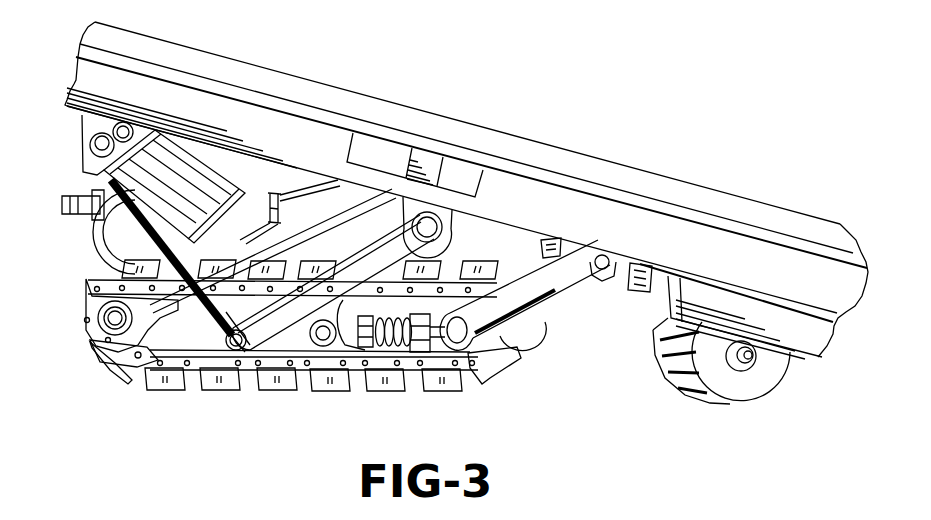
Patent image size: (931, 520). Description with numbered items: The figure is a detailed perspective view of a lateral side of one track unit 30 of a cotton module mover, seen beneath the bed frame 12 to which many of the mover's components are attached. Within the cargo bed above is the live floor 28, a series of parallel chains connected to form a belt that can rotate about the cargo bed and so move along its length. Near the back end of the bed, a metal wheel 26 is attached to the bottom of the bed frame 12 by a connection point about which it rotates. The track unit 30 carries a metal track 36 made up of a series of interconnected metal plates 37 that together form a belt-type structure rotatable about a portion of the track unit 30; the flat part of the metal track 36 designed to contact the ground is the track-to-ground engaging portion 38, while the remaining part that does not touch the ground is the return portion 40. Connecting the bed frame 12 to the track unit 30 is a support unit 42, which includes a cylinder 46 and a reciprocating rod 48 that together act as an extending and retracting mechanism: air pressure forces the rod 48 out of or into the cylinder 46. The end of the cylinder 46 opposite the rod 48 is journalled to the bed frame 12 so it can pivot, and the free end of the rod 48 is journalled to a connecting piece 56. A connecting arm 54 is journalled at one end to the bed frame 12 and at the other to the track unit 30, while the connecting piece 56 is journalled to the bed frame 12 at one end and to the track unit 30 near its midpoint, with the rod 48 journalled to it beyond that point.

The bed frame 12 is at (466, 190).
The metal wheels 26 is at (667, 378).
The live floor 28 is at (355, 77).
The track unit 30 is at (75, 277).
The metal track 36 is at (305, 377).
The metal plates 37 is at (217, 373).
The track-to-ground engaging portion 38 is at (400, 390).
The return portion 40 is at (516, 262).
The support unit 42 is at (97, 173).
The cylinder 46 is at (110, 245).
The reciprocating rod 48 is at (193, 370).
The connecting arms 54 is at (553, 287).
The connecting pieces 56 is at (360, 373).